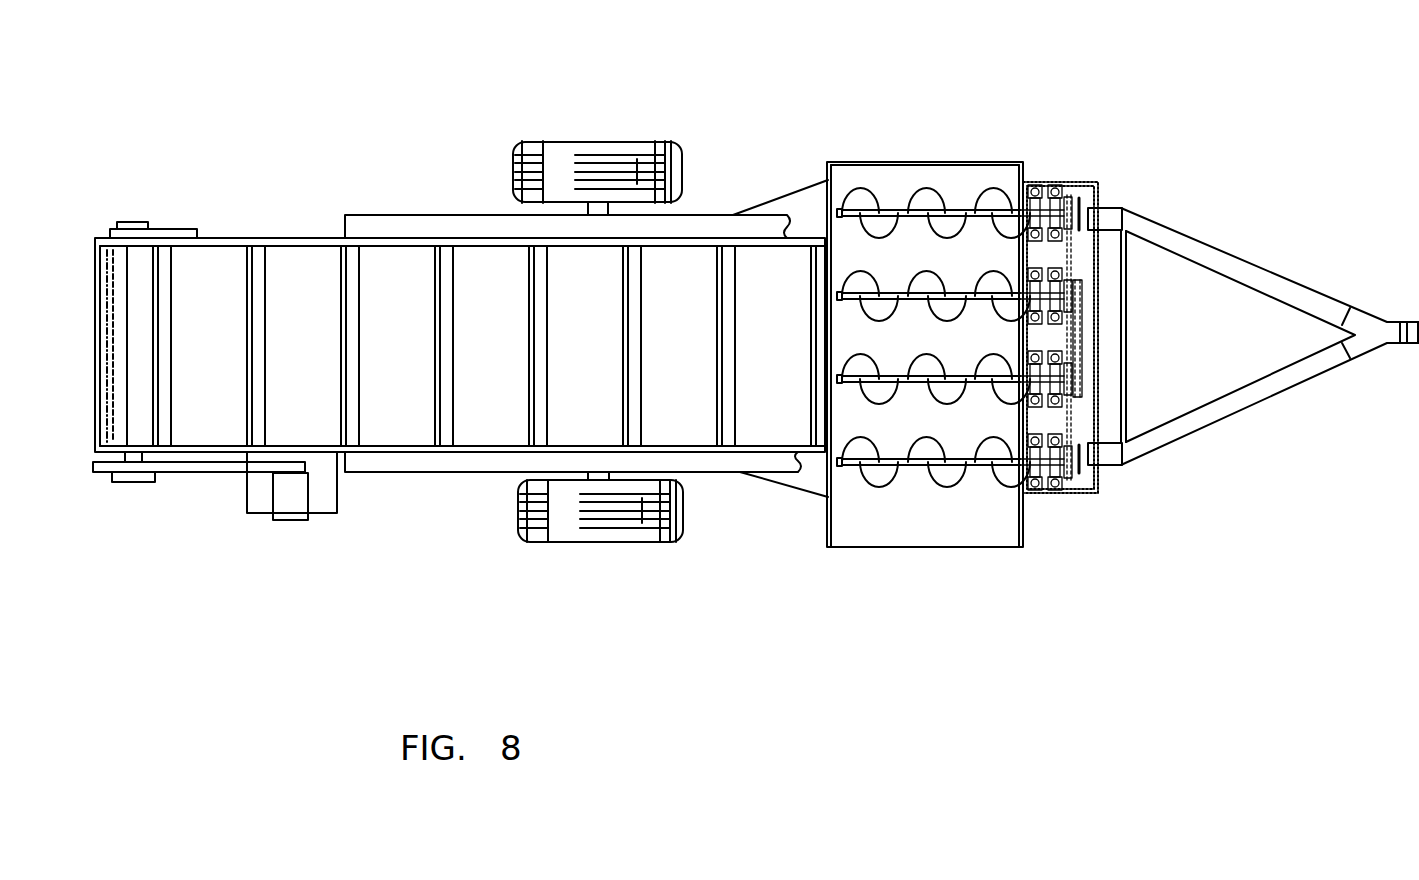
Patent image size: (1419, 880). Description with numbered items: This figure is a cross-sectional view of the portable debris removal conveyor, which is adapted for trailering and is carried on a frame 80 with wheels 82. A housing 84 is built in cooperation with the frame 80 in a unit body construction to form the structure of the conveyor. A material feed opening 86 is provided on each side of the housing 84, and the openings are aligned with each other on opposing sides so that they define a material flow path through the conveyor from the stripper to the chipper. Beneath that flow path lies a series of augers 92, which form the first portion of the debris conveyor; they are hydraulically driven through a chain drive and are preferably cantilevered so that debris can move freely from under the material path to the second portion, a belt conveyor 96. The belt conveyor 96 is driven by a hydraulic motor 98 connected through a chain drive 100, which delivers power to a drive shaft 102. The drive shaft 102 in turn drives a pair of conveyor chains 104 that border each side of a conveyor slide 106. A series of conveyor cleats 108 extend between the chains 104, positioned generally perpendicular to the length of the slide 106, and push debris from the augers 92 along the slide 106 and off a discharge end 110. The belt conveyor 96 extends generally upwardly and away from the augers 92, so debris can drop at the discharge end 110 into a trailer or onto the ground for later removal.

The frame 80 is at (1195, 237).
The wheels 82 is at (637, 148).
The housing 84 is at (828, 517).
The material feed opening 86 is at (950, 152).
The augers 92 is at (990, 220).
The belt conveyor 96 is at (318, 200).
The hydraulic motor 98 is at (297, 510).
The chain drive 100 is at (200, 472).
The drive shaft 102 is at (137, 222).
The conveyor chains 104 is at (383, 240).
The conveyor slide 106 is at (222, 280).
The conveyor cleats 108 is at (447, 302).
The discharge end 110 is at (76, 392).